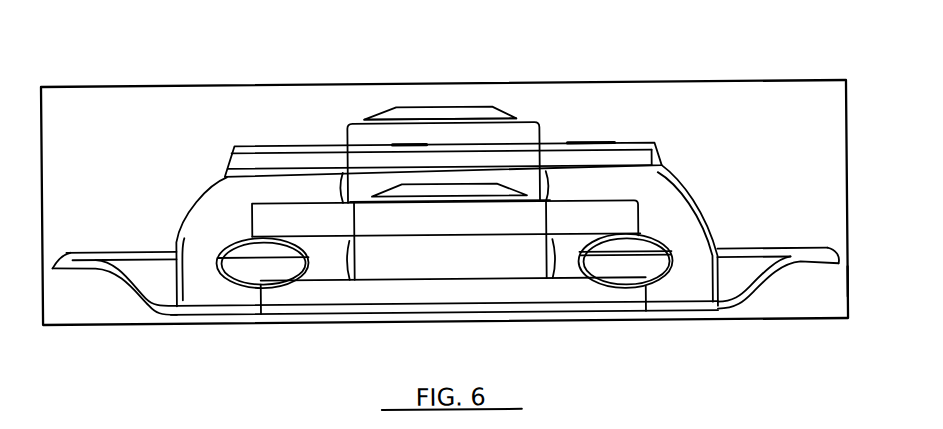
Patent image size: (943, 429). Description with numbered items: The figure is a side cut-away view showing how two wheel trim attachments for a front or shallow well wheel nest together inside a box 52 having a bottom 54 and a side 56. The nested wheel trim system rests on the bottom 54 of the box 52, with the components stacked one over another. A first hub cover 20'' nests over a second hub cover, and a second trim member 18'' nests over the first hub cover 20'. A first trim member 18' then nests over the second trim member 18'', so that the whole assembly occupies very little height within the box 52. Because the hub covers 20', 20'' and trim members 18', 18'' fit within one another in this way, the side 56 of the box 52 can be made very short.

The box 52 is at (704, 81).
The bottom 54 is at (450, 323).
The first trim member 18' is at (472, 144).
The second trim member 18'' is at (446, 240).
The first hub cover 20' is at (500, 219).
The first hub cover 20'' is at (473, 300).
The side 56 is at (847, 285).